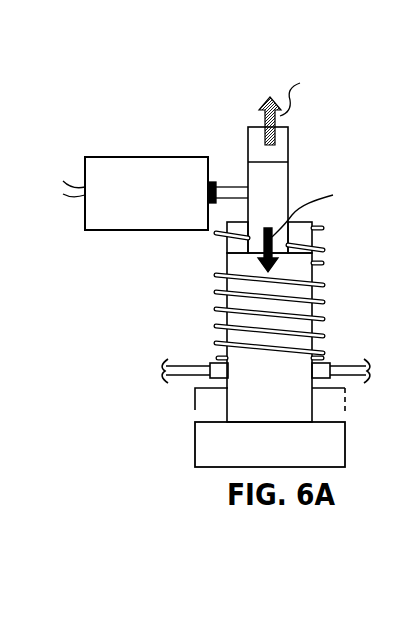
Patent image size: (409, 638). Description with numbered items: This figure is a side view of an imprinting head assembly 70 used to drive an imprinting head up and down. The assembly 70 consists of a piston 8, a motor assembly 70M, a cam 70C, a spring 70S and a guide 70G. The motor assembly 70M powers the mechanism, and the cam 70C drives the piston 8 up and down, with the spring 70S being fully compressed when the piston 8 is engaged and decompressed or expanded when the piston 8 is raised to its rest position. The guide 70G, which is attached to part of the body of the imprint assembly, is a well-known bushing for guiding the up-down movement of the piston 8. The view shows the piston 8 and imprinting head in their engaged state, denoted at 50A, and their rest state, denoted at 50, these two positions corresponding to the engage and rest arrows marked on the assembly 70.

The imprinting head assembly 70 is at (119, 115).
The motor assembly 70M is at (158, 165).
The cam 70C is at (283, 182).
The spring 70S is at (217, 275).
The piston 8 is at (305, 292).
The guide 70G is at (325, 362).
The rest state 50 is at (352, 400).
The engaged state 50A is at (338, 430).